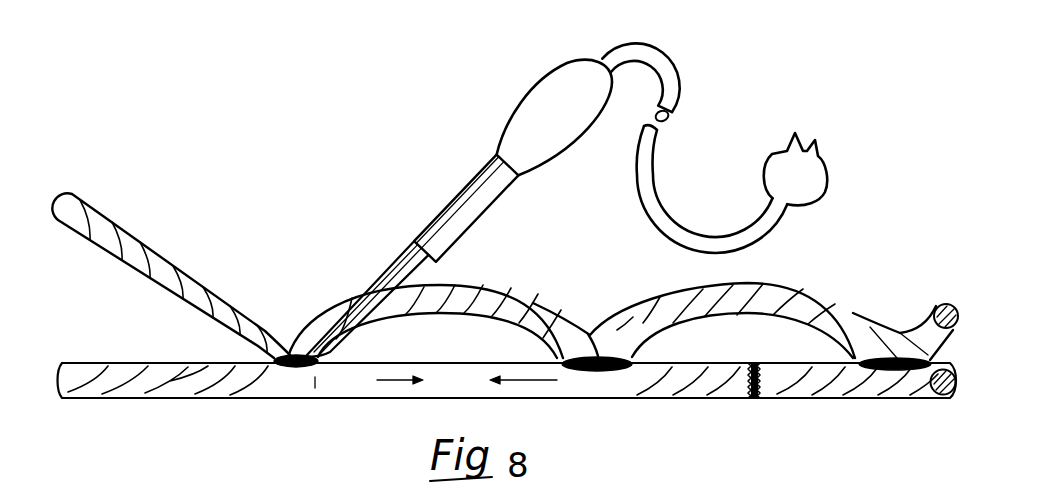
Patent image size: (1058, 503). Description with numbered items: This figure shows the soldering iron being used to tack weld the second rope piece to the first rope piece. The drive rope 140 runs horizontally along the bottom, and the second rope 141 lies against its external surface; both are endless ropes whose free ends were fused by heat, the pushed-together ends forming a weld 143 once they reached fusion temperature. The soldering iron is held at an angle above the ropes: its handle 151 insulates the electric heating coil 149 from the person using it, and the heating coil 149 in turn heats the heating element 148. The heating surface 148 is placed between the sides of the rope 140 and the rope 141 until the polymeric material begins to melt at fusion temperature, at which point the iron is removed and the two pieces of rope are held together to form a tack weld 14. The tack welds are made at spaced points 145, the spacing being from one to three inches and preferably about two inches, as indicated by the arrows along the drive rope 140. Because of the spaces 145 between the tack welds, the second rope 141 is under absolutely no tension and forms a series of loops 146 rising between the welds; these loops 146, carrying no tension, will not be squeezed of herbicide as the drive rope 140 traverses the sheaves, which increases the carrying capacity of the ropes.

The weld joints 14 is at (603, 374).
The endless rope 140 is at (167, 389).
The rope 141 is at (163, 252).
The weld 143 is at (756, 400).
The spaced points 145 is at (467, 381).
The loops 146 is at (811, 298).
The heating element 148 is at (303, 352).
The electric heating coil 149 is at (453, 213).
The handle 151 is at (558, 97).